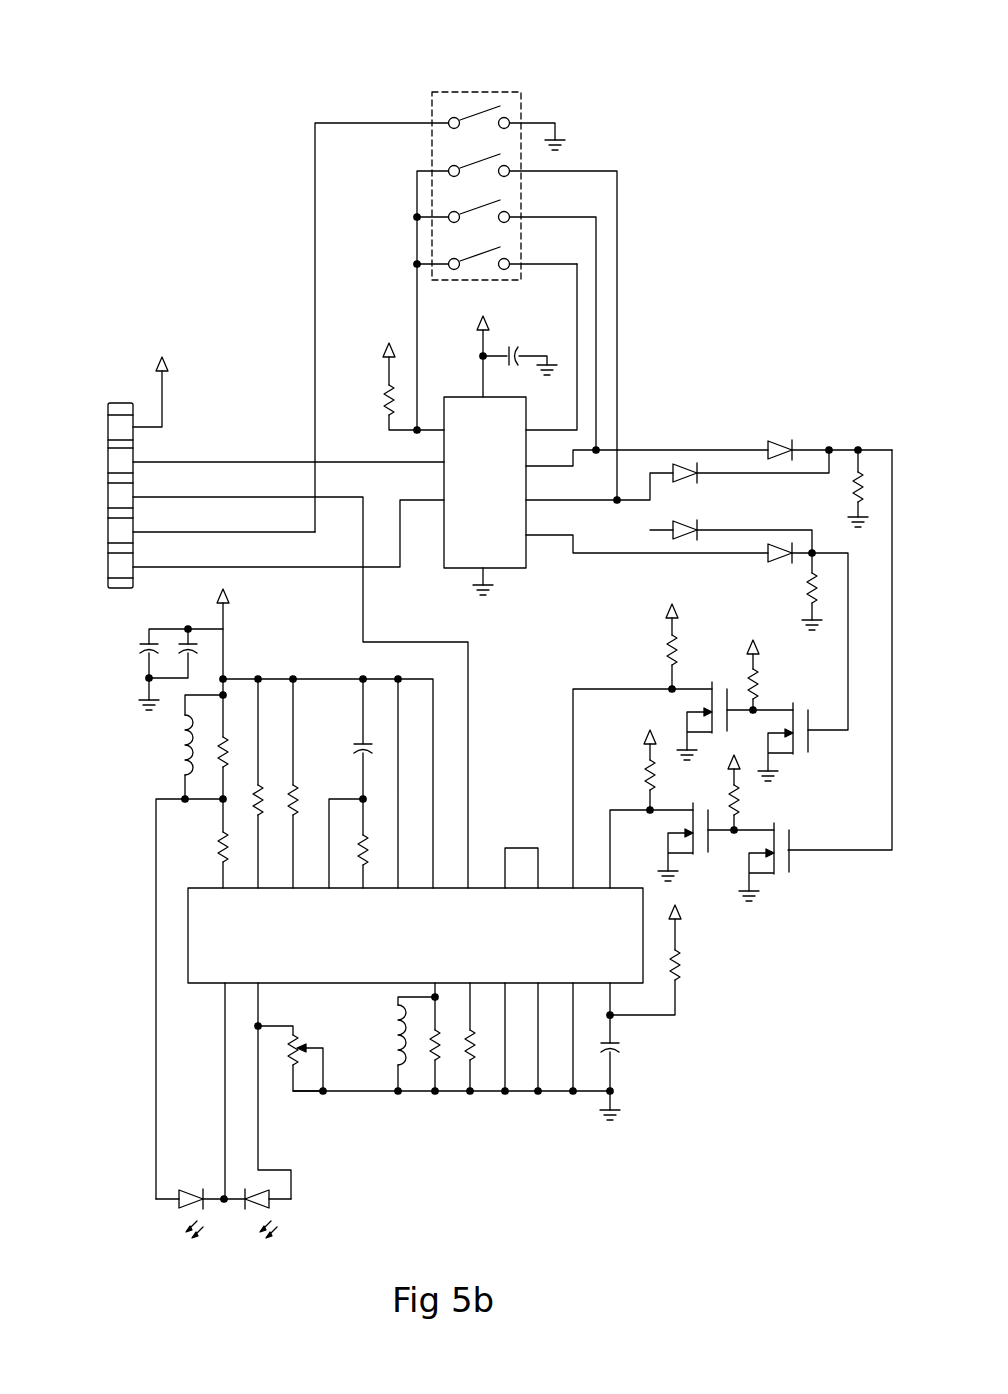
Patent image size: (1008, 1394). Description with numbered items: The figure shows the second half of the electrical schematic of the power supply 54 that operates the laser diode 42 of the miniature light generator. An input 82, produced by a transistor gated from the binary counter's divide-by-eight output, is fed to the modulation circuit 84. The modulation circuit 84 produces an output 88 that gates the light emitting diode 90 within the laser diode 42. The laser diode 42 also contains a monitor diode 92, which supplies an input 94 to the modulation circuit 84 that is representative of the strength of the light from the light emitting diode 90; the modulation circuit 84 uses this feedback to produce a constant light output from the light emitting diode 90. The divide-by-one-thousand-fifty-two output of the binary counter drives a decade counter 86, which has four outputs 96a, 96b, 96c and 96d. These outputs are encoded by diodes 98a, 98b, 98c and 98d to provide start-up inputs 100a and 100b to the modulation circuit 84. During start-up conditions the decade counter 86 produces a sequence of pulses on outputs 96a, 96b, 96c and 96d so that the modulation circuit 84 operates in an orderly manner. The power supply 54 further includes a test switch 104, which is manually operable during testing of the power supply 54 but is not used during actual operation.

The power supply 54 is at (762, 168).
The test switch 104 is at (477, 88).
The decade counter 86 is at (457, 572).
The output 96a is at (542, 425).
The output 96b is at (558, 461).
The output 96c is at (585, 497).
The output 96d is at (564, 540).
The diode 98a is at (787, 437).
The diode 98b is at (689, 457).
The diode 98c is at (670, 543).
The diode 98d is at (767, 560).
The start-up input 100a is at (571, 716).
The start-up input 100b is at (612, 802).
The input 82 is at (473, 782).
The modulation circuit 84 is at (650, 897).
The output 88 is at (215, 873).
The input 94 is at (263, 995).
The light emitting diode 90 is at (168, 1210).
The monitor diode 92 is at (273, 1210).
The laser diode 42 is at (235, 1203).